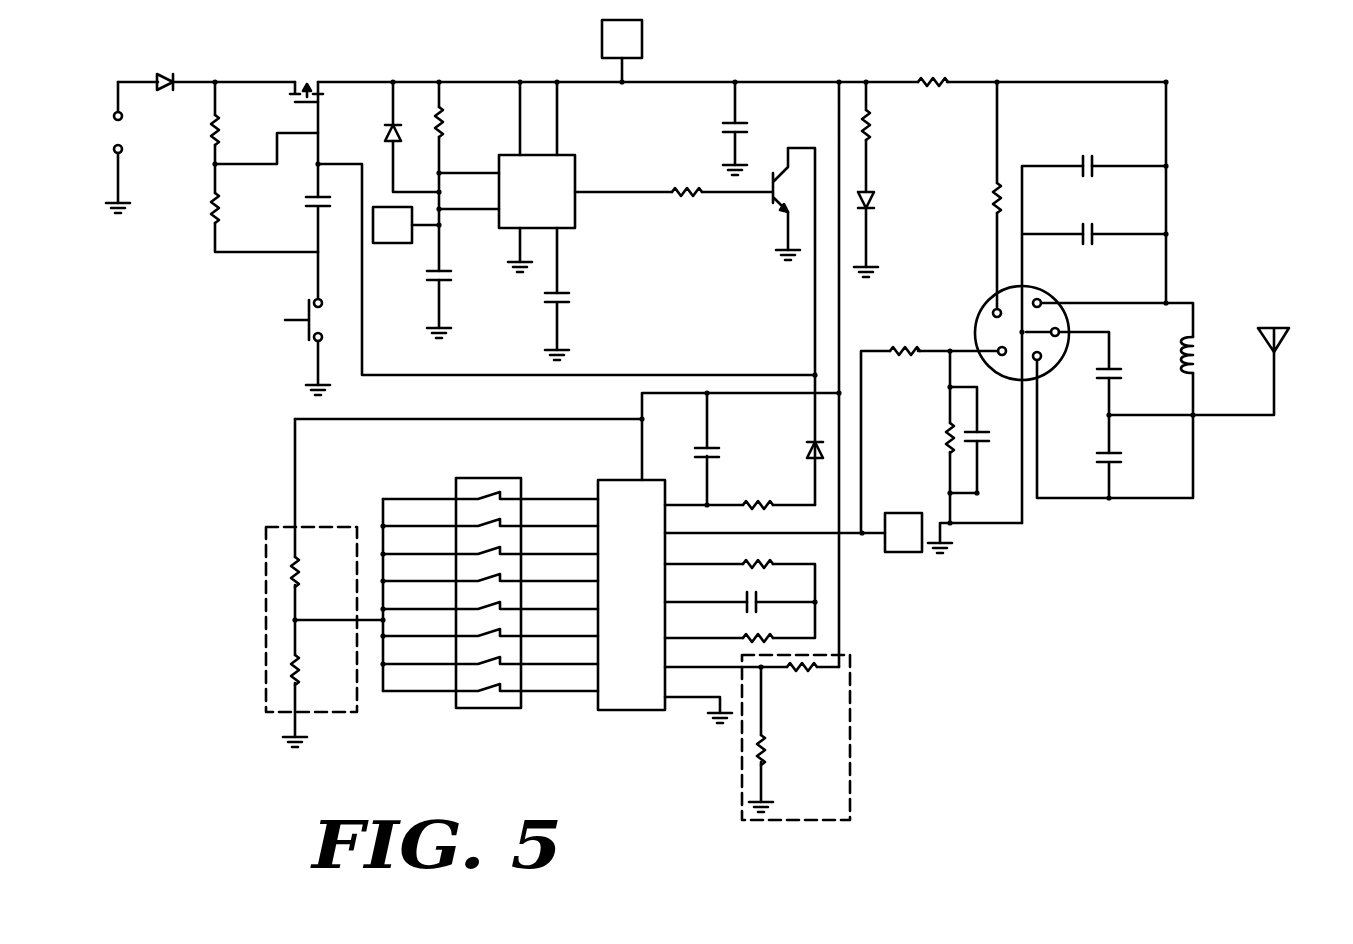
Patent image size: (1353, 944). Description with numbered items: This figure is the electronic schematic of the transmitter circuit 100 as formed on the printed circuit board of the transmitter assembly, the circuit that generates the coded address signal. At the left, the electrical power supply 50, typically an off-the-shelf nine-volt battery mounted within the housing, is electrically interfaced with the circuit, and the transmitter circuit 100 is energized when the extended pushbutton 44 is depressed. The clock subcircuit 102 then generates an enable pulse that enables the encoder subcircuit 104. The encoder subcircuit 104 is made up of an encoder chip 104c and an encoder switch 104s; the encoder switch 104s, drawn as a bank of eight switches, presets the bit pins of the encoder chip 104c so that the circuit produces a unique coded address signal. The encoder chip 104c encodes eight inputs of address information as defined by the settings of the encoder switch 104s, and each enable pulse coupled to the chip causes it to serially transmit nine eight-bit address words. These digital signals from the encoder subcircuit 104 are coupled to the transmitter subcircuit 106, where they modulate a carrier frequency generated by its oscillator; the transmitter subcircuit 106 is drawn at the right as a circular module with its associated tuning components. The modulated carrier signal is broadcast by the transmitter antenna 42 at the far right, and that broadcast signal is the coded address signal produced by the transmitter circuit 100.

The transmitter circuit 100 is at (133, 564).
The electrical power supply 50 is at (98, 133).
The extended pushbutton 44 is at (298, 342).
The clock subcircuit 102 is at (583, 154).
The encoder subcircuit 104 is at (599, 741).
The encoder switch 104s is at (494, 718).
The encoder chip 104c is at (632, 718).
The transmitter subcircuit 106 is at (1038, 514).
The transmitter antenna 42 is at (1294, 340).